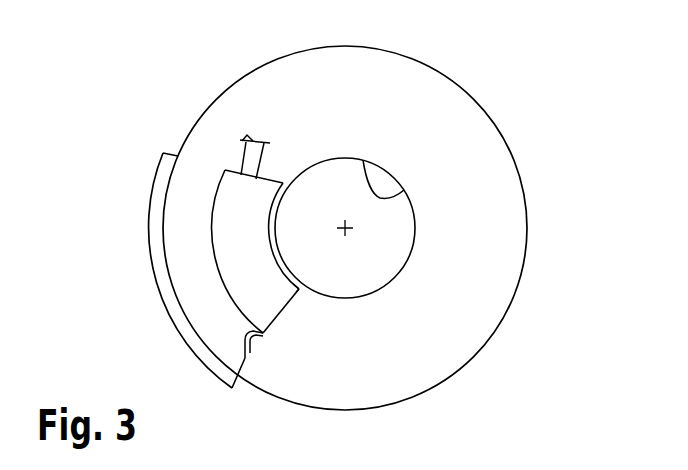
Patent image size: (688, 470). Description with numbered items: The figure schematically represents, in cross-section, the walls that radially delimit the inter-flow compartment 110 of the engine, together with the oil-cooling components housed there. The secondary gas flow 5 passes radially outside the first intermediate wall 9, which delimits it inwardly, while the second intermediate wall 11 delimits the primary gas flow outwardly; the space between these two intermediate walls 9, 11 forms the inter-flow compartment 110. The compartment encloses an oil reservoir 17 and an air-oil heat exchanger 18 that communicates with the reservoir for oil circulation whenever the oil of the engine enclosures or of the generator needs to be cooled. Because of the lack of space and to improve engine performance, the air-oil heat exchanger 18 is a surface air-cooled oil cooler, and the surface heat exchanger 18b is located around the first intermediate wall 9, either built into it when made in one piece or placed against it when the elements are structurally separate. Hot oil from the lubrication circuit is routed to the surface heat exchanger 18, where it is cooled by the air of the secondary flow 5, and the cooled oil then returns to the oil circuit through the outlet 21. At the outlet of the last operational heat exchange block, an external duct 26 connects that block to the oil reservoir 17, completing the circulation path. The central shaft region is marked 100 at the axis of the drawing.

The secondary gas flow 5 is at (178, 95).
The first intermediate wall 9 is at (432, 65).
The second intermediate wall 11 is at (404, 190).
The oil reservoir 17 is at (270, 303).
The air-oil heat exchanger 18 is at (145, 270).
The surface air-oil heat exchanger 18b is at (140, 233).
The outlet 21 is at (247, 159).
The external duct 26 is at (250, 353).
The shaft 100 is at (345, 228).
The inter-flow compartment 110 is at (461, 290).